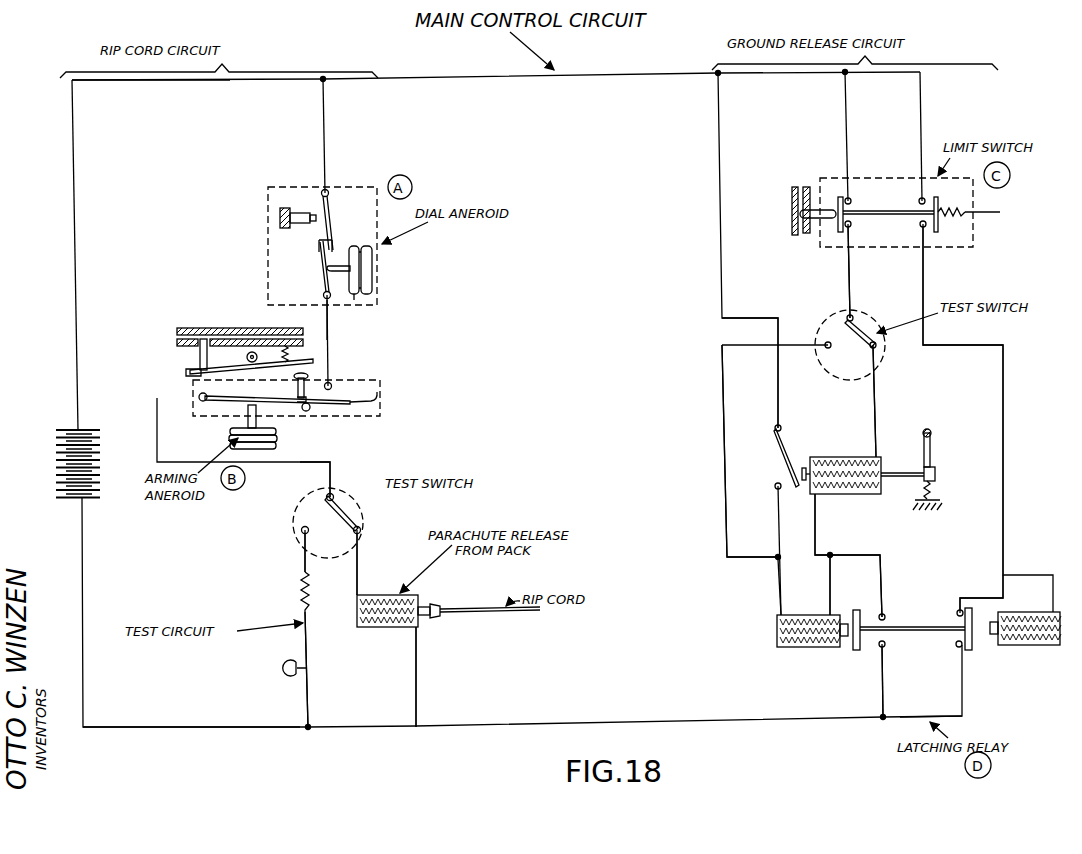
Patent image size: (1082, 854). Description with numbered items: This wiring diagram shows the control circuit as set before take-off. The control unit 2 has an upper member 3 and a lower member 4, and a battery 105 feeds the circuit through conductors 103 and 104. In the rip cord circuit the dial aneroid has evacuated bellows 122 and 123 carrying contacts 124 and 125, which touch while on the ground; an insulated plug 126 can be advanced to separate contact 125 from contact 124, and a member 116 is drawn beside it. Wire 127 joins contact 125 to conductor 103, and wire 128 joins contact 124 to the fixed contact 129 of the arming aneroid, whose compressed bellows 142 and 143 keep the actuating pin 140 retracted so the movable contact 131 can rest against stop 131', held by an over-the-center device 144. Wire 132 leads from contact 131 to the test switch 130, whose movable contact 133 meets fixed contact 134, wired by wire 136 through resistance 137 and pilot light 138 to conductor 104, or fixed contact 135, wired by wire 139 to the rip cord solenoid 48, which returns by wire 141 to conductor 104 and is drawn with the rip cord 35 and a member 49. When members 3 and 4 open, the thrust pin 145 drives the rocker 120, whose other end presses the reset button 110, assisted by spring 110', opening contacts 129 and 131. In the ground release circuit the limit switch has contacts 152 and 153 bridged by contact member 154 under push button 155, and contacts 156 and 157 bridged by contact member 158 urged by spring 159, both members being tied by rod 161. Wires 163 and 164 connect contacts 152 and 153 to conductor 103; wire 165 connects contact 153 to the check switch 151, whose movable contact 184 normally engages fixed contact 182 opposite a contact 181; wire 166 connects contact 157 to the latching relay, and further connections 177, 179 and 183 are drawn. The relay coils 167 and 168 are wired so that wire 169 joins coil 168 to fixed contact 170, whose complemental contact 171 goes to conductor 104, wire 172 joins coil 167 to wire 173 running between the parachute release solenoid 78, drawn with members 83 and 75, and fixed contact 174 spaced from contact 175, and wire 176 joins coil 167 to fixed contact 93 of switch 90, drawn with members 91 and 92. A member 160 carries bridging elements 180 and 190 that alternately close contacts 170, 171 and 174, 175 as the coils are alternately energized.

The control unit 2 is at (183, 324).
The upper member 3 is at (243, 326).
The lower member 4 is at (177, 343).
The rip cord 35 is at (533, 612).
The rip cord solenoid 48 is at (378, 628).
The solenoid plunger 49 is at (425, 604).
The pivot post 75 is at (931, 436).
The parachute release solenoid 78 is at (848, 457).
The lever arm 83 is at (933, 468).
The switch 90 is at (780, 471).
The plunger 91 is at (804, 468).
The switch blade 92 is at (785, 450).
The fixed contact 93 is at (775, 487).
The electric conductor 103 is at (180, 80).
The electric conductor 104 is at (218, 728).
The battery 105 is at (56, 454).
The reset button 110 is at (329, 369).
The spring 110' is at (305, 333).
The adjusting screw 116 is at (280, 218).
The rocker 120 is at (193, 372).
The bellows 122 is at (354, 300).
The bellows 123 is at (370, 290).
The contact 124 is at (322, 269).
The contact 125 is at (332, 228).
The insulated plug 126 is at (322, 205).
The wire 127 is at (330, 134).
The wire 128 is at (328, 331).
The fixed contact 129 is at (330, 384).
The test switch 130 is at (392, 487).
The movable contact 131 is at (289, 391).
The stop 131' is at (332, 419).
The wire 132 is at (318, 462).
The movable contact 133 is at (351, 512).
The fixed contact 134 is at (301, 530).
The fixed contact 135 is at (362, 528).
The wire 136 is at (305, 560).
The resistance 137 is at (301, 596).
The pilot light 138 is at (284, 670).
The wire 139 is at (360, 552).
The actuating pin 140 is at (248, 416).
The wire 141 is at (416, 663).
The bellows 142 is at (265, 432).
The bellows 143 is at (272, 443).
The over-the-center device 144 is at (380, 405).
The thrust pin 145 is at (200, 356).
The check switch 151 is at (860, 326).
The contact 152 is at (851, 199).
The contact 153 is at (851, 226).
The contact member 154 is at (838, 216).
The push button 155 is at (826, 210).
The contact 156 is at (920, 199).
The contact 157 is at (920, 225).
The movable contact member 158 is at (936, 208).
The spring 159 is at (999, 213).
The member 160 is at (900, 631).
The rod 161 is at (868, 208).
The wire 163 is at (848, 110).
The wire 164 is at (922, 103).
The wire 165 is at (849, 252).
The wire 166 is at (924, 272).
The relay coil 167 is at (810, 648).
The relay coil 168 is at (1035, 646).
The wire 169 is at (1000, 595).
The fixed contact 170 is at (957, 613).
The complemental contact 171 is at (957, 647).
The wire 172 is at (830, 578).
The wire 173 is at (847, 555).
The fixed contact 174 is at (884, 614).
The complemental contact 175 is at (883, 648).
The wire 176 is at (780, 578).
The lead 177 is at (722, 266).
The lead 179 is at (724, 374).
The contact-bridging element 180 is at (855, 652).
The contact 181 is at (827, 349).
The fixed contact 182 is at (875, 349).
The lead 183 is at (876, 393).
The movable contact 184 is at (857, 351).
The contact-bridging element 190 is at (972, 648).